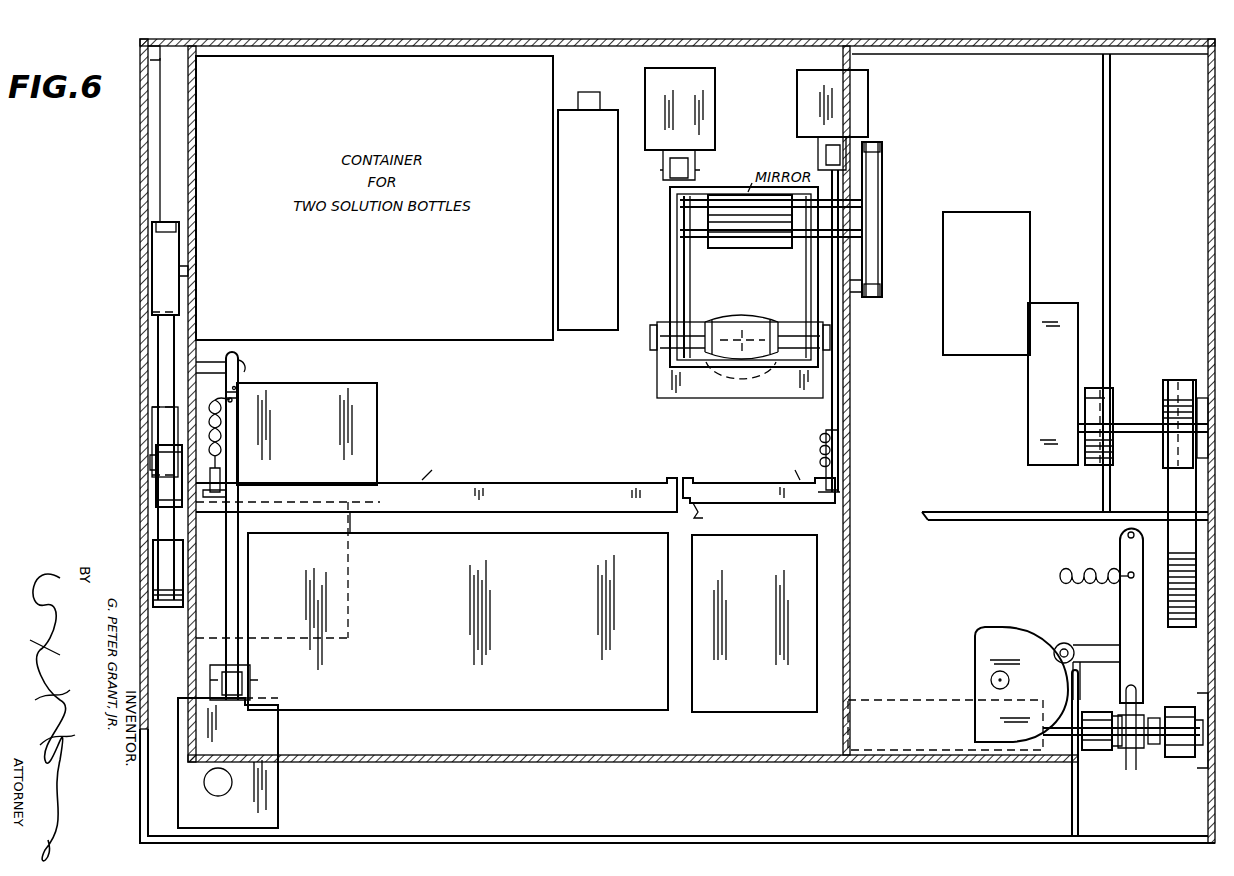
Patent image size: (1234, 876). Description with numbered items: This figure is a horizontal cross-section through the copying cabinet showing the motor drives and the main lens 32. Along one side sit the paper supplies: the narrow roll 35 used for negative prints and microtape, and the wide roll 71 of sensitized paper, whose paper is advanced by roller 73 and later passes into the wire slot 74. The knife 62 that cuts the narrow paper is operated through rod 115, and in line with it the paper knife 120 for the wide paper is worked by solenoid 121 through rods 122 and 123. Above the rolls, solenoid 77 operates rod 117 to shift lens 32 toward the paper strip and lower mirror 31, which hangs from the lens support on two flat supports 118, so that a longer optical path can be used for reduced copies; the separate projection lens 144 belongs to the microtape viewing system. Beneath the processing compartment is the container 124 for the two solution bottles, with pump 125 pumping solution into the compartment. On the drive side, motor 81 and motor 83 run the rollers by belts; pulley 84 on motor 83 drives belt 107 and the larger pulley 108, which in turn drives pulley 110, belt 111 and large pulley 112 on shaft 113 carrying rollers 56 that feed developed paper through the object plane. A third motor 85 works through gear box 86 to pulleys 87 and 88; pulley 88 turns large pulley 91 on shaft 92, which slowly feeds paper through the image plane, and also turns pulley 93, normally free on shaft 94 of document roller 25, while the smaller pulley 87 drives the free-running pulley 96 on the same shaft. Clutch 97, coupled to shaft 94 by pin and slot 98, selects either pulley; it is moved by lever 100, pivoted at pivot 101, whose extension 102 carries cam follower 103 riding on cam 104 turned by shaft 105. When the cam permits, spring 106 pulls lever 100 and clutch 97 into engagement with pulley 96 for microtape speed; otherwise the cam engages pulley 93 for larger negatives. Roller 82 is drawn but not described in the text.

The document roller 25 is at (888, 715).
The mirror 31 is at (708, 190).
The lens 32 is at (748, 318).
The narrow roll 35 is at (745, 712).
The rollers 56 is at (722, 248).
The knife 62 is at (706, 516).
The wide roll 71 is at (558, 710).
The roller 73 is at (218, 782).
The slot 74 is at (212, 396).
The solenoid 77 is at (652, 88).
The motor 81 is at (352, 573).
The lower cylinder 82 is at (160, 562).
The motor 83 is at (355, 383).
The pulley 84 is at (165, 432).
The motor 85 is at (1020, 212).
The gear box 86 is at (1028, 403).
The pulley 87 is at (1095, 467).
The pulley 88 is at (1180, 380).
The large pulley 91 is at (1180, 487).
The shaft 92 is at (960, 510).
The pulley 93 is at (1182, 707).
The shaft 94 is at (1185, 772).
The free-running pulley 96 is at (1098, 750).
The clutch 97 is at (1130, 770).
The pin and slot 98 is at (1154, 718).
The lever 100 is at (1120, 608).
The pivot 101 is at (1126, 536).
The extension 102 is at (1098, 662).
The cam follower 103 is at (1076, 632).
The cam 104 is at (1010, 627).
The shaft 105 is at (990, 676).
The spring 106 is at (1075, 577).
The belt 107 is at (165, 356).
The pulley 108 is at (165, 258).
The pulley 110 is at (882, 275).
The belt 111 is at (876, 238).
The large pulley 112 is at (882, 160).
The shaft 113 is at (868, 208).
The rod 115 is at (845, 325).
The rod 117 is at (672, 252).
The flat supports 118 is at (812, 286).
The paper knife 120 is at (596, 492).
The solenoid 121 is at (278, 795).
The rod 122 is at (238, 555).
The rod 123 is at (245, 380).
The container for two solution bottles 124 is at (490, 328).
The pump 125 is at (612, 330).
The lens 144 is at (868, 92).